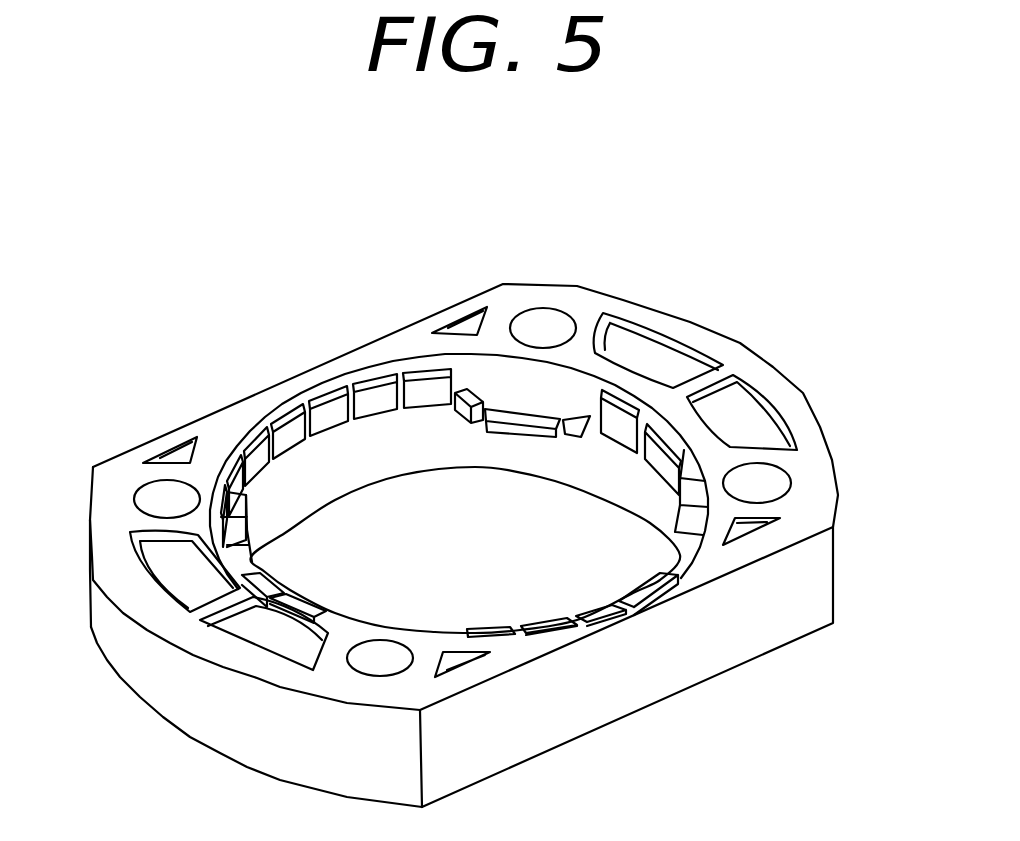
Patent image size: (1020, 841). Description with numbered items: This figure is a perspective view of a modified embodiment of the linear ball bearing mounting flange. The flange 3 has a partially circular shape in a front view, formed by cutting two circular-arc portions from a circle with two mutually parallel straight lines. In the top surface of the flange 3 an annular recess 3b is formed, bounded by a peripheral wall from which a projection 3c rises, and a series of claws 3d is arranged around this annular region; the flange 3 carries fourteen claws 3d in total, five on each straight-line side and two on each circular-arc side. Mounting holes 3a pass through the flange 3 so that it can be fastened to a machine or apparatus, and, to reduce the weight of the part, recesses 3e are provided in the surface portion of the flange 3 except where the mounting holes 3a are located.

The flange 3 is at (402, 340).
The mounting hole 3a is at (548, 322).
The annular recess 3b is at (290, 408).
The projection of a peripheral wall 3c is at (240, 480).
The claw 3d is at (668, 456).
The recess 3e is at (270, 640).